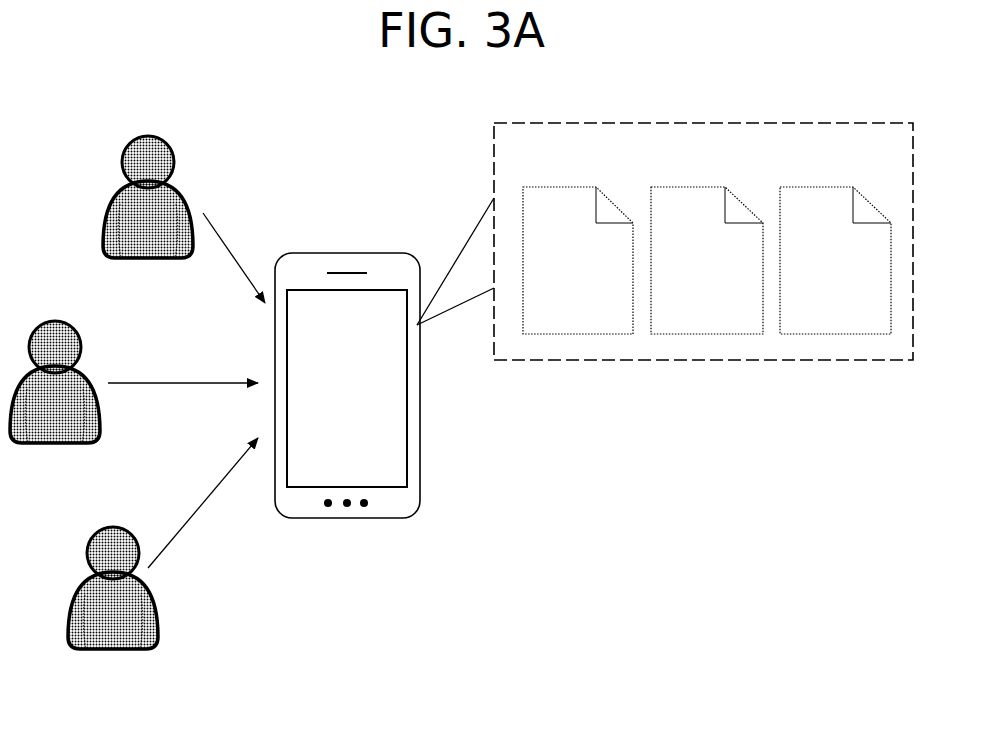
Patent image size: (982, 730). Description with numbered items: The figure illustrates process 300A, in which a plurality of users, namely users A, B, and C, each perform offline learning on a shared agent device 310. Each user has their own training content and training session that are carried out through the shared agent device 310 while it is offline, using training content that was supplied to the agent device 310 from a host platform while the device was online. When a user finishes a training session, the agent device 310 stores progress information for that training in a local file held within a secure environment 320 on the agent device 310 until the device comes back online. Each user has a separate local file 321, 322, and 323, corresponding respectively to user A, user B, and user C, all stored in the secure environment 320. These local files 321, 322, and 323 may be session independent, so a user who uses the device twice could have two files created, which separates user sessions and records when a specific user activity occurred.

The process 300A is at (85, 58).
The shared agent device 310 is at (347, 436).
The secure environment 320 is at (703, 241).
The local file 321 is at (578, 260).
The local file 322 is at (707, 260).
The local file 323 is at (835, 260).